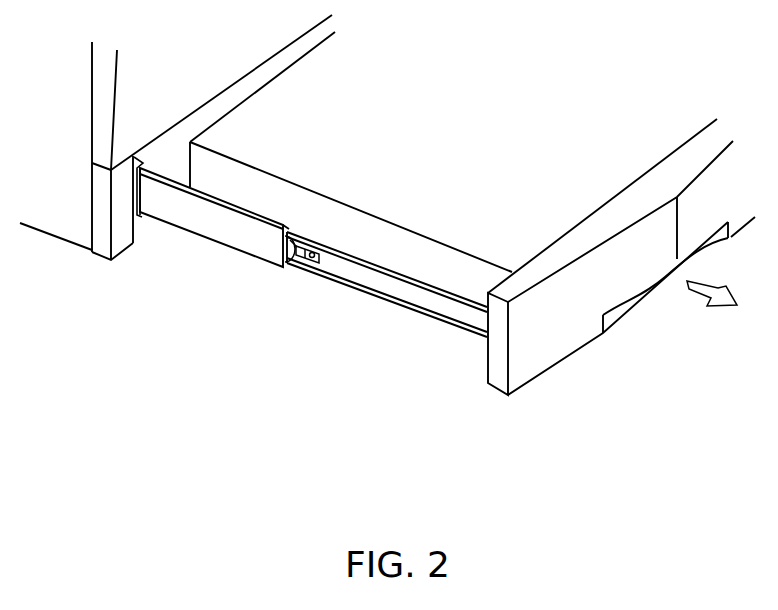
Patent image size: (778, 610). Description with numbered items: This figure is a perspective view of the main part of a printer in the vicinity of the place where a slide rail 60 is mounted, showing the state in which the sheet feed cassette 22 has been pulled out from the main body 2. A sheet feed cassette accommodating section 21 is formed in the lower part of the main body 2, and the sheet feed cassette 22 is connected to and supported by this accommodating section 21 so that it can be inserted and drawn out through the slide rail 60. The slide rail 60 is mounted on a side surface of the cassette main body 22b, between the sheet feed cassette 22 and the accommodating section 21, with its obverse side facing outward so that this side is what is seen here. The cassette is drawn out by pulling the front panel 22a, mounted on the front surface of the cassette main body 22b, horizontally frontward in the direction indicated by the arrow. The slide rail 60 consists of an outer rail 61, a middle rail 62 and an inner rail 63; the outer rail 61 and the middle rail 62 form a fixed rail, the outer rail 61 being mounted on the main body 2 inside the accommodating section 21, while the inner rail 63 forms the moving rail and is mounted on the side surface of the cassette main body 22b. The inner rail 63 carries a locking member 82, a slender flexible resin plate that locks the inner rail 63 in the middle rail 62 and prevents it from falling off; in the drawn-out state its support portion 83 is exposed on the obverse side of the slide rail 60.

The main body 2 is at (103, 135).
The sheet feed cassette accommodating section 21 is at (178, 136).
The sheet feed cassette 22 is at (472, 243).
The front panel 22a is at (558, 323).
The cassette main body 22b is at (372, 242).
The slide rail 60 is at (310, 223).
The outer rail 61 is at (138, 152).
The middle rail 62 is at (208, 193).
The inner rail 63 is at (413, 315).
The locking member 82 is at (293, 273).
The support portion 83 is at (292, 235).